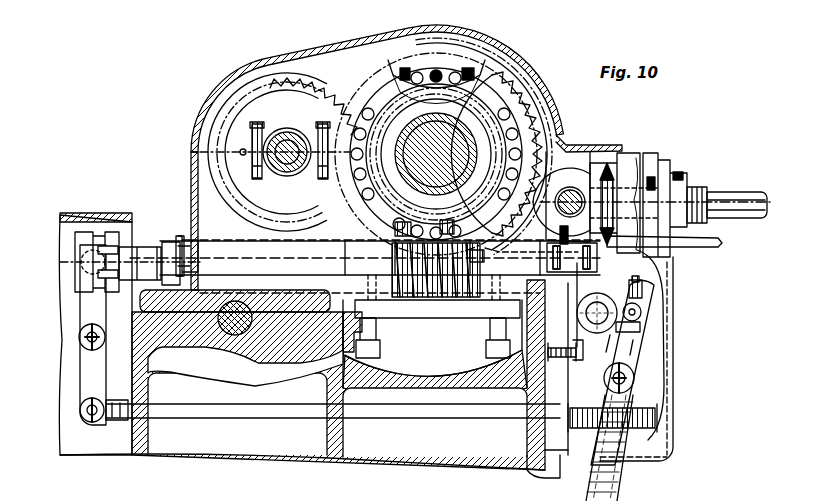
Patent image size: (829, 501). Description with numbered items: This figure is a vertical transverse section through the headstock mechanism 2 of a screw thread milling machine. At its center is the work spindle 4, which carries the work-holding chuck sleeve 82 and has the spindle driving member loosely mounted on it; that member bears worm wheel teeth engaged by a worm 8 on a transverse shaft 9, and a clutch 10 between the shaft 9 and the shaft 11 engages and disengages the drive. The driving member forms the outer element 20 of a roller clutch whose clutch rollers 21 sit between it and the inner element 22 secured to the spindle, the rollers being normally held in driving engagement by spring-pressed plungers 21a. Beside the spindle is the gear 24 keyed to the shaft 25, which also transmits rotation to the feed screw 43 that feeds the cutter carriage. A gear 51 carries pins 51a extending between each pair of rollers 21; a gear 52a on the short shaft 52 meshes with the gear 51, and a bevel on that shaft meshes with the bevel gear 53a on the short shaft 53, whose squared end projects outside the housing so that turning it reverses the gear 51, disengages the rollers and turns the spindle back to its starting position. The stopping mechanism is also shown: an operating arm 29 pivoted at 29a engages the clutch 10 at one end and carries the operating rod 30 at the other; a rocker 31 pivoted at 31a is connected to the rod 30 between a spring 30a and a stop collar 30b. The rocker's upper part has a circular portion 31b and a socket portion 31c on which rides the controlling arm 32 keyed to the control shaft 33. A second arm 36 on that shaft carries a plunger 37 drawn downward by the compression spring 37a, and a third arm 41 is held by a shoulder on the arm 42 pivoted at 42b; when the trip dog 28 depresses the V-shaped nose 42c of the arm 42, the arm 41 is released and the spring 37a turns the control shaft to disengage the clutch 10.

The headstock mechanism 2 is at (340, 42).
The gear 24 is at (292, 60).
The shaft 25 is at (287, 140).
The work spindle 4 is at (448, 128).
The chuck sleeve 82 is at (444, 185).
The inner element 22 is at (432, 86).
The outer element 20 is at (468, 68).
The clutch rollers 21 is at (412, 50).
The spring-pressed plungers 21a is at (474, 74).
The pin 51a is at (440, 70).
The trip dog 28 is at (458, 222).
The V-shaped nose 42c is at (438, 226).
The pivot of arm 42 42b is at (486, 248).
The transverse shaft 9 is at (250, 262).
The worm 8 is at (440, 300).
The feed screw 43 is at (228, 338).
The operating rod 30 is at (250, 412).
The shaft 11 is at (58, 268).
The operating arm 29 is at (82, 320).
The pivot of operating arm 29a is at (84, 344).
The clutch 10 is at (107, 236).
The gear 51 is at (572, 170).
The gear 52a is at (580, 190).
The short shaft 52 is at (616, 175).
The bevel gear 53a is at (650, 170).
The short shaft 53 is at (758, 182).
The arm 42 is at (724, 243).
The third arm 41 is at (588, 283).
The control shaft 33 is at (590, 320).
The second arm 36 is at (642, 288).
The controlling arm 32 is at (641, 312).
The circular portion 31b is at (640, 327).
The socket portion 31c is at (633, 342).
The rocker 31 is at (636, 356).
The pivot of rocker 31a is at (634, 378).
The plunger 37 is at (600, 360).
The stop collar 30b is at (640, 436).
The spring 30a is at (560, 480).
The compression spring 37a is at (628, 486).